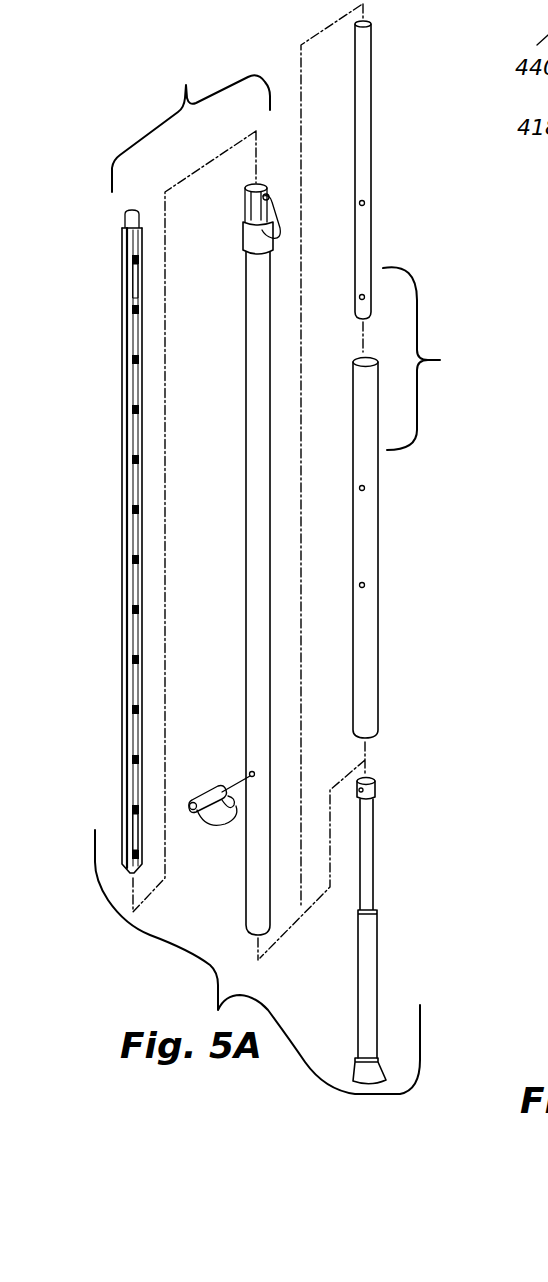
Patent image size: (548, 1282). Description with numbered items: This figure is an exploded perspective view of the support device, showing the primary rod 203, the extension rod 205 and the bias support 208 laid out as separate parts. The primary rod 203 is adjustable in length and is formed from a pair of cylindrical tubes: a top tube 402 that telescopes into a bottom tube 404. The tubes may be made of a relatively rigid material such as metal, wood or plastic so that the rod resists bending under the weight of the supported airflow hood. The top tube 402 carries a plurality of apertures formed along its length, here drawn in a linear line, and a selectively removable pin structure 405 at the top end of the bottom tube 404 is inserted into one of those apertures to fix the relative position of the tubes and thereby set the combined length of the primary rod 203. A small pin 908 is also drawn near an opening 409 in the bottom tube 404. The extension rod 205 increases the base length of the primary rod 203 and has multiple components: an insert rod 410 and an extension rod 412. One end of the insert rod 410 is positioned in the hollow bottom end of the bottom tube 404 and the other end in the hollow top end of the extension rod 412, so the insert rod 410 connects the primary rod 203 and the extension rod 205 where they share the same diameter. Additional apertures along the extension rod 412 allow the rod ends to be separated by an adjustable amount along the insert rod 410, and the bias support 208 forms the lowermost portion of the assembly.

The primary rod 203 is at (191, 125).
The extension rod 205 is at (437, 358).
The bias support 208 is at (388, 912).
The top tube 402 is at (122, 436).
The bottom tube 404 is at (250, 437).
The selectively removable pin structure 405 is at (248, 240).
The hole 409 is at (250, 779).
The insert rod 410 is at (362, 112).
The extension rod 412 is at (370, 550).
The locking pin 908 is at (205, 795).